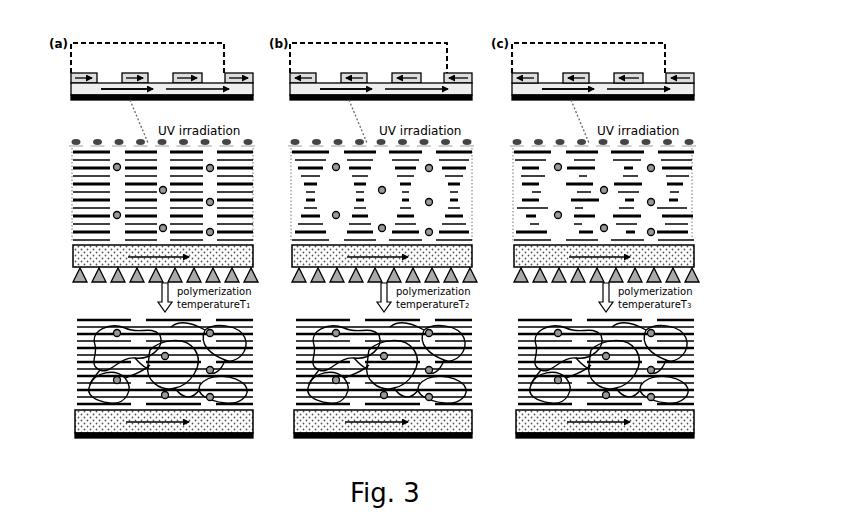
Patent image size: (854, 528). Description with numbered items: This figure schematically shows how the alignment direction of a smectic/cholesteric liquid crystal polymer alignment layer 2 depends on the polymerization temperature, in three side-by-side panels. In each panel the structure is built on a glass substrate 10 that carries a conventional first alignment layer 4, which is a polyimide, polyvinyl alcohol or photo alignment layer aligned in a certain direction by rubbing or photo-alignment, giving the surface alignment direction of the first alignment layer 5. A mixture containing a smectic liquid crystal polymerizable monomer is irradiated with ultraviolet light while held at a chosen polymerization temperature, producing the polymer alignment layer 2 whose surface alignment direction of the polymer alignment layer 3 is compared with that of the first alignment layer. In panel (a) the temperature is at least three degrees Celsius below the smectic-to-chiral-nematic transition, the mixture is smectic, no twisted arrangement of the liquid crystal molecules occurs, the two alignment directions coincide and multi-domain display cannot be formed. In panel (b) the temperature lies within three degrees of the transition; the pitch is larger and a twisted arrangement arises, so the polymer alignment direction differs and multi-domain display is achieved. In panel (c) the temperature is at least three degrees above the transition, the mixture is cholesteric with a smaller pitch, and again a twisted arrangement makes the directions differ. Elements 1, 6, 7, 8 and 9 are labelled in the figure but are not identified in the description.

The electric field region 1 is at (594, 47).
The polymer alignment layer 2 is at (690, 61).
The surface alignment direction of the polymer alignment layer 3 is at (534, 64).
The first alignment layer 4 is at (614, 85).
The surface alignment direction of the first alignment layer 5 is at (604, 106).
The alignment layer 6 is at (611, 142).
The liquid crystal molecules 7 is at (613, 196).
The reactive monomer 8 is at (634, 200).
The polymer network 9 is at (622, 351).
The glass substrate 10 is at (618, 424).